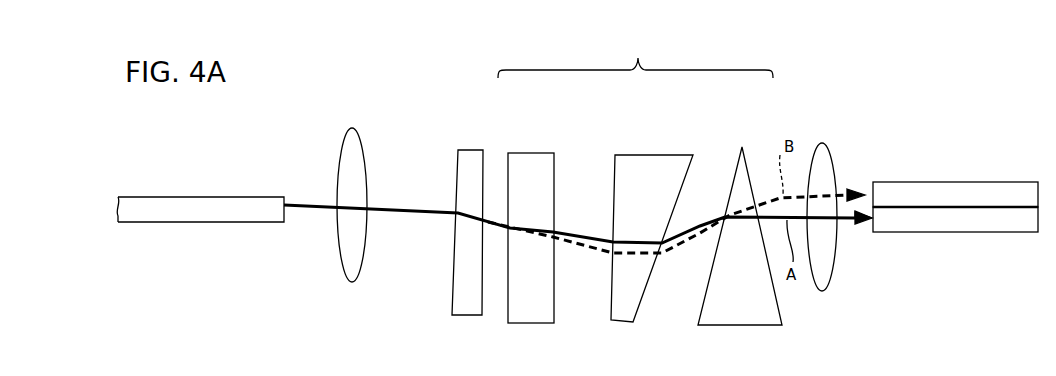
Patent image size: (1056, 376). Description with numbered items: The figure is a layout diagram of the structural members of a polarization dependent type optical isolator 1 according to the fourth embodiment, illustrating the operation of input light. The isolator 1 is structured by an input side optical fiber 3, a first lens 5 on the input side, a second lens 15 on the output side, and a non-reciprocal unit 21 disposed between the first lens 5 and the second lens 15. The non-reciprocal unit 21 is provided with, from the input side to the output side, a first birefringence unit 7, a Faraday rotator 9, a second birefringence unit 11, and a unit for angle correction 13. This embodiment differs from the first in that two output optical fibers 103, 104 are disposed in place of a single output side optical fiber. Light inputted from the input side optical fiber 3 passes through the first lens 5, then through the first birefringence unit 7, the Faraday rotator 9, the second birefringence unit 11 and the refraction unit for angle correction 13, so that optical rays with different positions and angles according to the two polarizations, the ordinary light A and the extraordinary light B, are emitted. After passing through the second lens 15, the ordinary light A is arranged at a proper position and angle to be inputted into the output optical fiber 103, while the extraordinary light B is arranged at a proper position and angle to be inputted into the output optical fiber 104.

The polarization dependent type optical isolator 1 is at (963, 83).
The input side optical fiber 3 is at (232, 195).
The first lens 5 is at (363, 150).
The first birefringence unit 7 is at (478, 150).
The Faraday rotator 9 is at (522, 153).
The second birefringence unit 11 is at (652, 155).
The unit for angle correction 13 is at (748, 163).
The second lens 15 is at (825, 143).
The non-reciprocal unit 21 is at (635, 60).
The output optical fiber 103 is at (940, 232).
The output optical fiber 104 is at (957, 182).